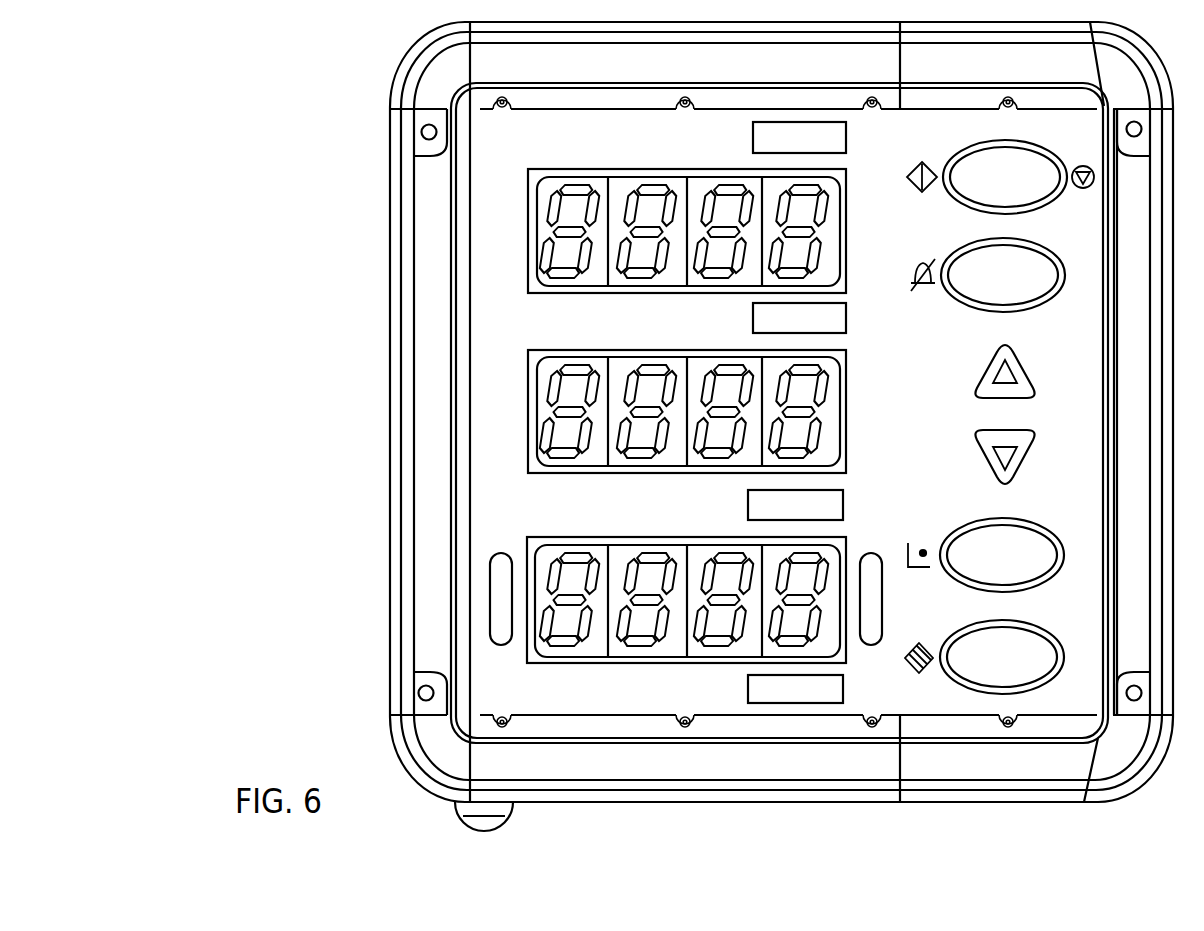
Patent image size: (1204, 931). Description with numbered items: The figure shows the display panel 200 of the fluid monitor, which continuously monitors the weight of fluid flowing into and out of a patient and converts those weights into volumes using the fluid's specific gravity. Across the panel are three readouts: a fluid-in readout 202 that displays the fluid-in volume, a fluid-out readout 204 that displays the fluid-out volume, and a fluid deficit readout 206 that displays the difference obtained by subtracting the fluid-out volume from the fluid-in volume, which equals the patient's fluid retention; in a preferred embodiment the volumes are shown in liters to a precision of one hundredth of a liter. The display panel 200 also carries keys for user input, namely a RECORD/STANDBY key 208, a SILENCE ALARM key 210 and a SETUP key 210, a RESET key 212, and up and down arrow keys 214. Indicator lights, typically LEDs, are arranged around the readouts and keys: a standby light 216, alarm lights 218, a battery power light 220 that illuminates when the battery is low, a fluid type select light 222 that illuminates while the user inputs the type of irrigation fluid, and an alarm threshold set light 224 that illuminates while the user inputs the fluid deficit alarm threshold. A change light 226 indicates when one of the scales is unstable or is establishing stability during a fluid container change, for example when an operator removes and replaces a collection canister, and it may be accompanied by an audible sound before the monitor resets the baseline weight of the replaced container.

The display panel 200 is at (304, 132).
The fluid-in readout 202 is at (815, 170).
The fluid-out readout 204 is at (815, 350).
The fluid deficit readout 206 is at (815, 537).
The RECORD/STANDBY key 208 is at (975, 150).
The SILENCE ALARM key / SETUP key 210 is at (1058, 262).
The RESET key 212 is at (1050, 640).
The up and down arrow keys 214 is at (1040, 333).
The standby light 216 is at (1085, 163).
The alarm lights 218 is at (496, 552).
The battery power light 220 is at (846, 140).
The fluid type select light 222 is at (846, 325).
The alarm threshold set light 224 is at (843, 690).
The change light 226 is at (843, 503).